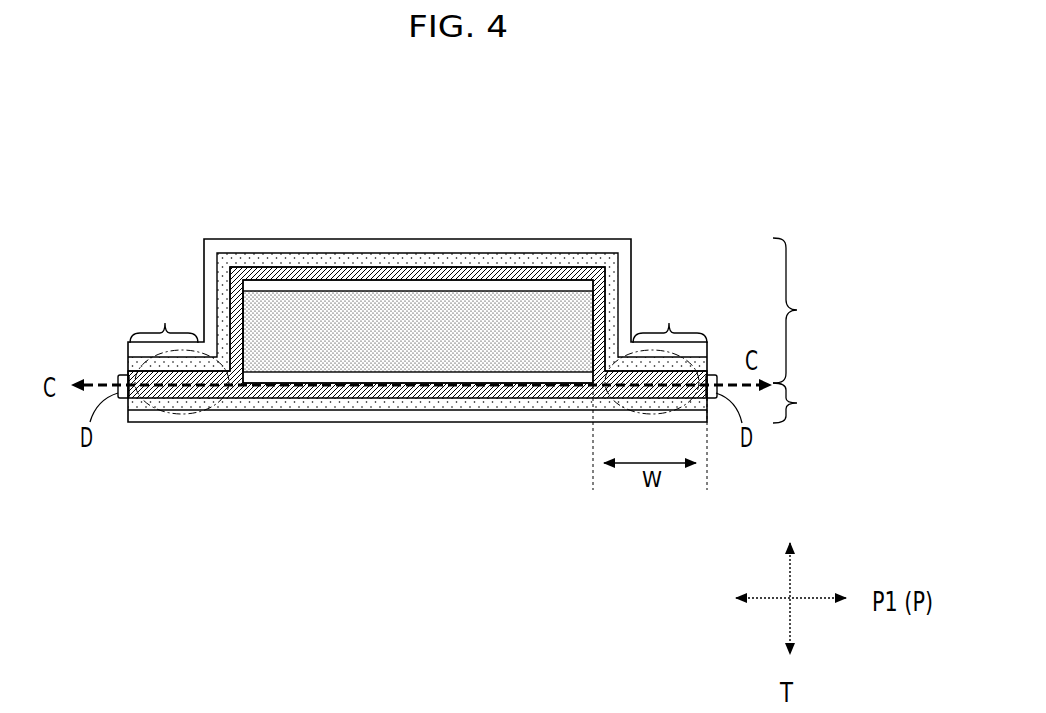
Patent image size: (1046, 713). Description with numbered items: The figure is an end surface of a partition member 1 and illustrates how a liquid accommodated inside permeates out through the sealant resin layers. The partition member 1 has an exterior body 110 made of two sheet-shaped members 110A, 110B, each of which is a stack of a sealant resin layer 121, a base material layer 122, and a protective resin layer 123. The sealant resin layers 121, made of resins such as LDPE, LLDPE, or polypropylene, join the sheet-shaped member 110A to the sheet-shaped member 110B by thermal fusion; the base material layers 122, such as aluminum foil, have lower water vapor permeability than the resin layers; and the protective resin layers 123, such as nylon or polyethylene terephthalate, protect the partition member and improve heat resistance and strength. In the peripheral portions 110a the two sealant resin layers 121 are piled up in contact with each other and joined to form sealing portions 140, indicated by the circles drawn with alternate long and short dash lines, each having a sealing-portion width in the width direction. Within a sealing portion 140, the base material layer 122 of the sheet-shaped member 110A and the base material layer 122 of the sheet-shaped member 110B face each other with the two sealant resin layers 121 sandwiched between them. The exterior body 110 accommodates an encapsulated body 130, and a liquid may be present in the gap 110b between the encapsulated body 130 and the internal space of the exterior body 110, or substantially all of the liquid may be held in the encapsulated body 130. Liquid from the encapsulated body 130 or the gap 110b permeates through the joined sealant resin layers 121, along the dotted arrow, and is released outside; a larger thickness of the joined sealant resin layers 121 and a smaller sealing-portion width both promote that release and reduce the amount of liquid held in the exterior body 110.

The partition member 1 is at (581, 145).
The exterior body 110 is at (891, 356).
The sheet-shaped member 110A is at (820, 310).
The sheet-shaped member 110B is at (820, 403).
The peripheral portion 110a is at (418, 311).
The gap 110b is at (388, 289).
The sealant resin layer 121 is at (550, 268).
The base material layer 122 is at (489, 253).
The protective resin layer 123 is at (425, 239).
The encapsulated body 130 is at (300, 322).
The sealing portion 140 is at (165, 415).